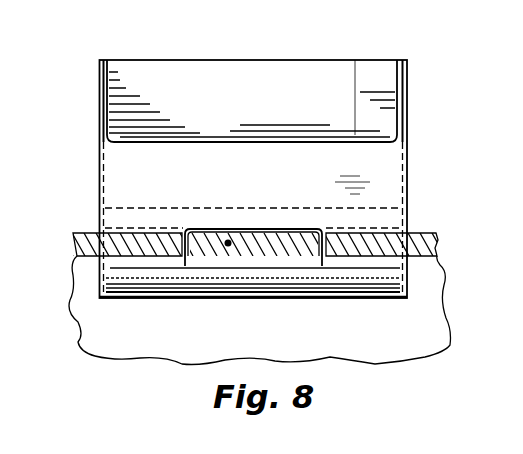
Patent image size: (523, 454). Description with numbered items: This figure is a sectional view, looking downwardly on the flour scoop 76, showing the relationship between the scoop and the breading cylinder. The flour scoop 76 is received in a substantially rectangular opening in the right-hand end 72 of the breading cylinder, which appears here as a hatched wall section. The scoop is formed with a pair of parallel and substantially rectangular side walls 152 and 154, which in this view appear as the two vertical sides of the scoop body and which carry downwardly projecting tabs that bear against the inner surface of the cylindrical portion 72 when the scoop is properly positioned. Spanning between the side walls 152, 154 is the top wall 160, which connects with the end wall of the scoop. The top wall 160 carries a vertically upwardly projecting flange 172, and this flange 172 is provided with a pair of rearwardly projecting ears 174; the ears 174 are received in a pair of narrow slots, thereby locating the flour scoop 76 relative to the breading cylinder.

The flour scoop 76 is at (300, 60).
The side wall 152 is at (99, 107).
The side wall 154 is at (408, 108).
The top wall 160 is at (196, 174).
The vertically upwardly projecting flange 172 is at (240, 229).
The rearwardly projecting ears 174 is at (185, 256).
The right-hand end of the breading cylinder 72 is at (415, 233).